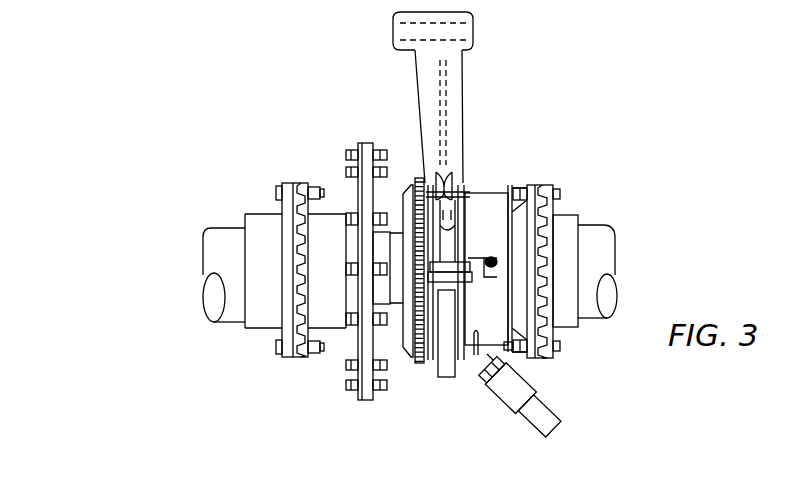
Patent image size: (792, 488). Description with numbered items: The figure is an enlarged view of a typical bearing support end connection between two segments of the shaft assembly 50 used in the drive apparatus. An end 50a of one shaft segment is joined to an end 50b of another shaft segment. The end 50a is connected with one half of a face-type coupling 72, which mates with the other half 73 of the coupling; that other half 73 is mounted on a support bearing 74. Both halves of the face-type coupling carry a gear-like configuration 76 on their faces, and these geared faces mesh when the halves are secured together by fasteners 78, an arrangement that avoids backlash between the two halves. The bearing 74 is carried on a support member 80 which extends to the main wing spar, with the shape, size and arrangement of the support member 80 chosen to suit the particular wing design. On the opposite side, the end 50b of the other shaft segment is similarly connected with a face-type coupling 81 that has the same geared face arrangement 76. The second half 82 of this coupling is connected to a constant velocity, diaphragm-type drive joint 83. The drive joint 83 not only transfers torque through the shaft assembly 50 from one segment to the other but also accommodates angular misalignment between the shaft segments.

The shaft assembly 50 is at (210, 193).
The end of one shaft segment 50a is at (612, 242).
The end of another shaft segment 50b is at (206, 248).
The face-type coupling 72 is at (577, 215).
The other half of face-type coupling 73 is at (533, 185).
The support bearing 74 is at (492, 193).
The gear-like configuration 76 is at (296, 250).
The fasteners 78 is at (567, 356).
The support member 80 is at (457, 68).
The face-type coupling 81 is at (287, 182).
The second half of the coupling 82 is at (334, 340).
The constant velocity, diaphragm-type drive joint 83 is at (357, 143).